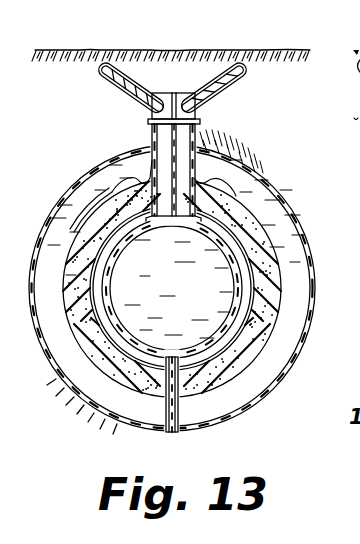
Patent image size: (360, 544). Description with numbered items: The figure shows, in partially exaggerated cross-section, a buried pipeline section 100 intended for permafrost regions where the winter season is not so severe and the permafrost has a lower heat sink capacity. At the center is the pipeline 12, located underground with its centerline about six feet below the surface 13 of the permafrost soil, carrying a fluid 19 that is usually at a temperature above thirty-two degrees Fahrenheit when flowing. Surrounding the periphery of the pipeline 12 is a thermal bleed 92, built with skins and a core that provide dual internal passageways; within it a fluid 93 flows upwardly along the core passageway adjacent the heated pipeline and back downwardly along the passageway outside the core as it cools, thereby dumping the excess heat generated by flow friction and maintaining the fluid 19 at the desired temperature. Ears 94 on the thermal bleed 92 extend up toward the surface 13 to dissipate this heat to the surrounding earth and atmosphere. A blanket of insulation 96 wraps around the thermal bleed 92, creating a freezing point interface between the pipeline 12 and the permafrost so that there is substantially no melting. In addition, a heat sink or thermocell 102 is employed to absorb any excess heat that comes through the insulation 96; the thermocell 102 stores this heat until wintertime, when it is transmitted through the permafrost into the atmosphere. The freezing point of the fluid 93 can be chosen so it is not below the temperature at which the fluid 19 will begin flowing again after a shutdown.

The surface 13 is at (78, 52).
The ears 94 is at (133, 88).
The fluid 93 is at (163, 143).
The thermocell 102 is at (84, 186).
The section 100 is at (305, 193).
The insulation 96 is at (88, 237).
The thermal bleed 92 is at (110, 238).
The pipeline 12 is at (110, 267).
The fluid 19 is at (211, 304).